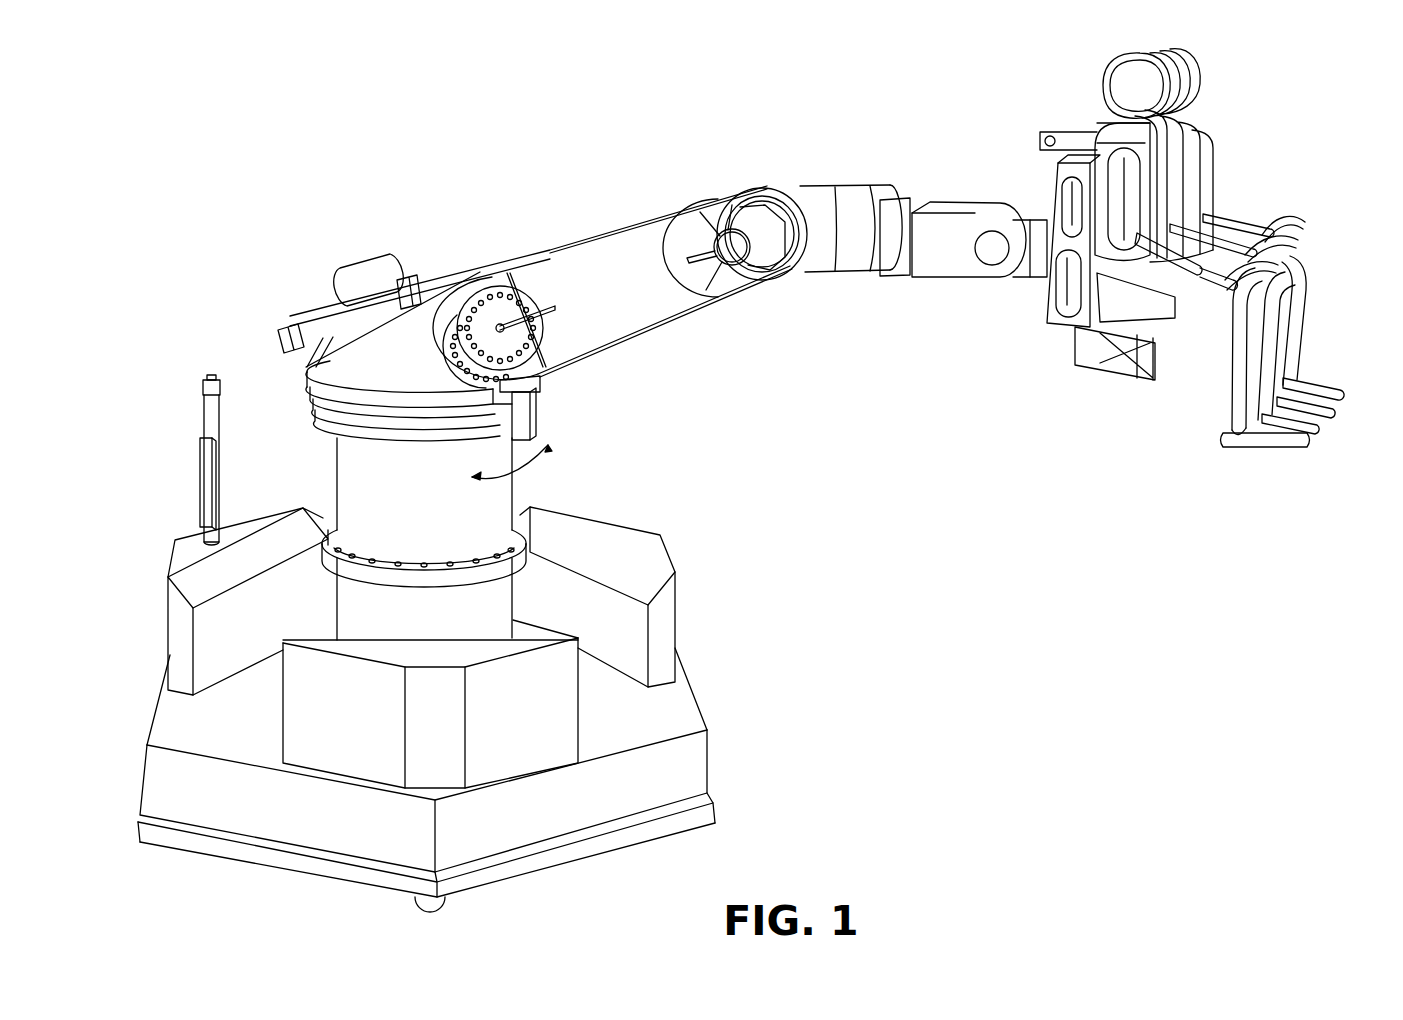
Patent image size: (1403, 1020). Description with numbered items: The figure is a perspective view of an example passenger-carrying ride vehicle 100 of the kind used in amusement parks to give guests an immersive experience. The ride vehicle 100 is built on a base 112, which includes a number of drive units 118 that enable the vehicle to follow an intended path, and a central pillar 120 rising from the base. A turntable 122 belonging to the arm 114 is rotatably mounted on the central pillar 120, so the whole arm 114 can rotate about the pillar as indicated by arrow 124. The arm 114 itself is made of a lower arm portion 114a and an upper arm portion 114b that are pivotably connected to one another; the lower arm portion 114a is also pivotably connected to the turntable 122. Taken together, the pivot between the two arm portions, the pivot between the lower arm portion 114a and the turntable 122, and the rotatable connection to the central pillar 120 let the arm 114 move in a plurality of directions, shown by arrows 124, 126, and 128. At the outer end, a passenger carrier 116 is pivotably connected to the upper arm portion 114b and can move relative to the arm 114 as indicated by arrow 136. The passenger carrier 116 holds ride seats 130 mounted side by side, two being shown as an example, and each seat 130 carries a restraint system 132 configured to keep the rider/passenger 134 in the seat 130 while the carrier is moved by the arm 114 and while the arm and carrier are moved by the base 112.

The passenger-carrying ride vehicle 100 is at (353, 92).
The base 112 is at (250, 818).
The arm 114 is at (610, 208).
The lower arm portion 114a is at (632, 308).
The upper arm portion 114b is at (868, 255).
The passenger carrier 116 is at (1288, 200).
The drive units 118 is at (176, 562).
The central pillar 120 is at (445, 505).
The turntable 122 is at (307, 386).
The arrow 124 is at (550, 445).
The arrow 126 is at (562, 222).
The arrow 128 is at (785, 302).
The ride seats 130 is at (1136, 325).
The restraint system 132 is at (1108, 128).
The rider/passenger 134 is at (1123, 78).
The arrow 136 is at (903, 323).